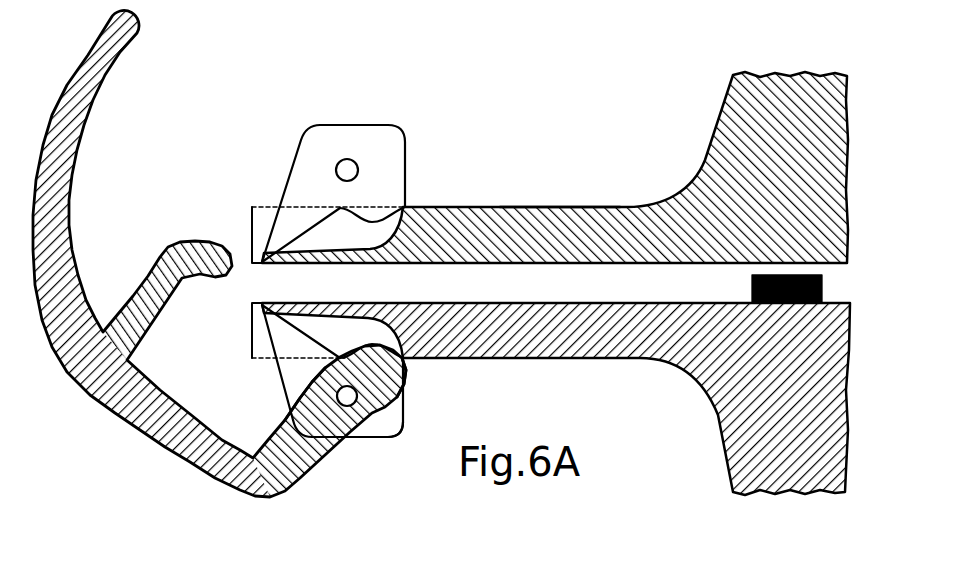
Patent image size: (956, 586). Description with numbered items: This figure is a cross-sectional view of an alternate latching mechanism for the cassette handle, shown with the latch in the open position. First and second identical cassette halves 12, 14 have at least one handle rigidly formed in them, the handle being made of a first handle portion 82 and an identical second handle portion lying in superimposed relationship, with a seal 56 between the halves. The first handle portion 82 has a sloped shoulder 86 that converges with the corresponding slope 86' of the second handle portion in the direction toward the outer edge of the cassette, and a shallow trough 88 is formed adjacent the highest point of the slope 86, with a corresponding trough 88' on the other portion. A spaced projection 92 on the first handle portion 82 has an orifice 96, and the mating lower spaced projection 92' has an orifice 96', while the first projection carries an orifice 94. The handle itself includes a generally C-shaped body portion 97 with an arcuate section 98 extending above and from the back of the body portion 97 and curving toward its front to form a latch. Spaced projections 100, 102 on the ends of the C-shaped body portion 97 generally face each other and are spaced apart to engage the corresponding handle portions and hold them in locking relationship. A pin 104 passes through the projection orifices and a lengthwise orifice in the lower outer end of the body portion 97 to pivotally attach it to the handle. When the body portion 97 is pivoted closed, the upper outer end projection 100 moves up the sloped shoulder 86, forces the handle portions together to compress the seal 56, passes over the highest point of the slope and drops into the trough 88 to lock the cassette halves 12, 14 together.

The first cassette half 12 is at (599, 207).
The second cassette half 14 is at (594, 360).
The seal 56 is at (752, 291).
The first handle portion 82 is at (559, 188).
The sloped shoulder 86 is at (301, 220).
The sloped shoulder of second handle portion 86' is at (274, 332).
The shallow trough 88 is at (402, 198).
The shallow trough of second handle portion 88' is at (434, 378).
The second spaced projection 92 is at (356, 171).
The lower spaced projection 92' is at (320, 371).
The orifice 94 is at (397, 423).
The orifice 96 is at (395, 162).
The orifice in lower spaced projection 96' is at (360, 431).
The C-shaped body portion 97 is at (165, 441).
The arcuate section 98 is at (79, 136).
The upper outer end projection 100 is at (233, 280).
The lower spaced projection of C-shaped body 102 is at (320, 373).
The pin 104 is at (387, 345).